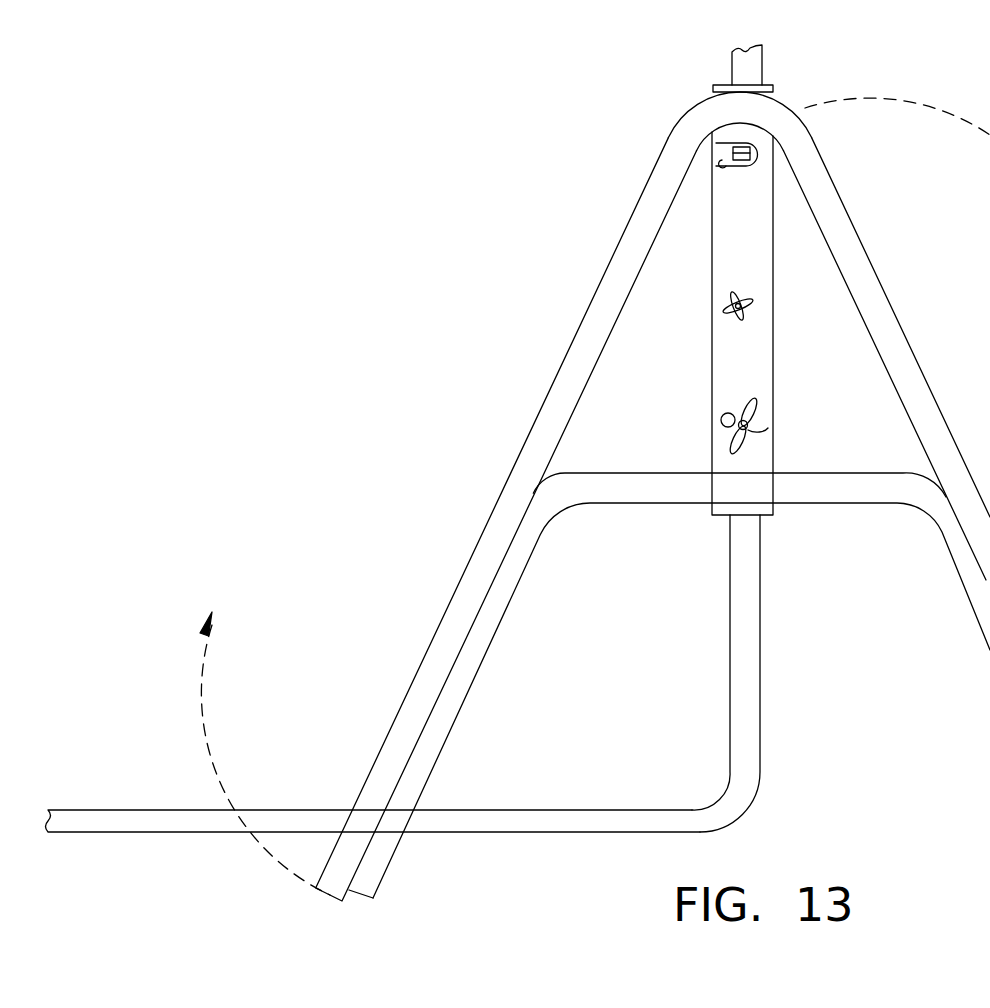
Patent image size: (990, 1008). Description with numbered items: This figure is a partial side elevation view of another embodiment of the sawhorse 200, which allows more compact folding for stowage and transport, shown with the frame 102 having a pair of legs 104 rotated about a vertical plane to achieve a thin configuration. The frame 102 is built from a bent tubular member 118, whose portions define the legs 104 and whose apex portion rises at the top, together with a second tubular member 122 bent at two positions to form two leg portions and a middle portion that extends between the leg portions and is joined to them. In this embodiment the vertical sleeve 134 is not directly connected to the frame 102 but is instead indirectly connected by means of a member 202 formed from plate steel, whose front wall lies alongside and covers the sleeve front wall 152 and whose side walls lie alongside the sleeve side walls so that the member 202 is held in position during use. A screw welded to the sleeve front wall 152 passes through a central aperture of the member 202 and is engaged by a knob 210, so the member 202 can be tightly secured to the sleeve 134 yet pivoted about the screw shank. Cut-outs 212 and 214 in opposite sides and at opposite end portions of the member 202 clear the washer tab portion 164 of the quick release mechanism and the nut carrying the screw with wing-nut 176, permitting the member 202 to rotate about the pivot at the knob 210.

The frame 102 is at (837, 213).
The legs 104 is at (515, 483).
The tubular member 118 is at (878, 317).
The second tubular member 122 is at (870, 505).
The vertical sleeve 134 is at (716, 158).
The sleeve front wall 152 is at (768, 428).
The tab portion 164 is at (733, 152).
The wing-nut 176 is at (763, 417).
The sawhorse 200 is at (806, 80).
The member 202 is at (763, 365).
The knob 210 is at (728, 312).
The cut-out 212 is at (726, 165).
The cut-out 214 is at (721, 421).